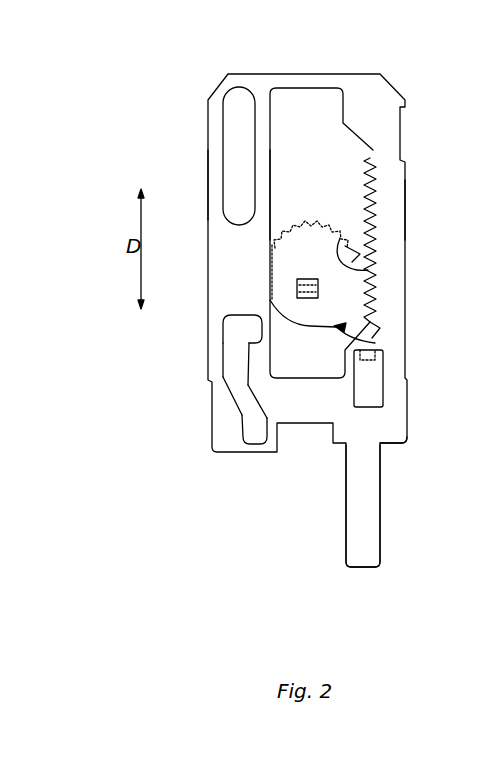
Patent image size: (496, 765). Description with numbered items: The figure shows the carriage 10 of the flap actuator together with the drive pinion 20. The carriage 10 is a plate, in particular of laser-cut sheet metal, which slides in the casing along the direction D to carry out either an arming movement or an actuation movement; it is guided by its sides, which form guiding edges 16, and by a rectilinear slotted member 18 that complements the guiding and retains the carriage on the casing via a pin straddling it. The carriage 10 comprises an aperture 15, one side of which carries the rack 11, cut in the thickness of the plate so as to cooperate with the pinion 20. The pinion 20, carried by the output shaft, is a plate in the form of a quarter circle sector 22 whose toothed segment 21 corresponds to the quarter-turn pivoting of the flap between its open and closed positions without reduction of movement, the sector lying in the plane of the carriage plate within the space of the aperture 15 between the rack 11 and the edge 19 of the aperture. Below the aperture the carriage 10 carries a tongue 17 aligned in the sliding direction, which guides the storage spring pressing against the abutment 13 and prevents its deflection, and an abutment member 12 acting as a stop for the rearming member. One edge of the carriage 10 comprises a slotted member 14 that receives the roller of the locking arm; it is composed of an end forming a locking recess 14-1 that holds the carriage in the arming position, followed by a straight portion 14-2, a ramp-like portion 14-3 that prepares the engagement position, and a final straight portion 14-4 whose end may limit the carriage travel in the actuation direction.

The carriage 10 is at (353, 88).
The rack 11 is at (405, 192).
The abutment member 12 is at (365, 389).
The abutment 13 is at (390, 443).
The slotted member 14 is at (185, 391).
The recess 14-1 is at (248, 330).
The straight portion 14-2 is at (247, 357).
The ramp-like portion 14-3 is at (268, 390).
The straight portion 14-4 is at (255, 434).
The aperture 15 is at (320, 143).
The guiding edges 16 is at (208, 187).
The tongue 17 is at (362, 520).
The rectilinear slotted member 18 is at (235, 110).
The edge of the aperture 19 is at (270, 202).
The pinion 20 is at (318, 268).
The toothed segment 21 is at (360, 270).
The quarter circle sector 22 is at (375, 343).